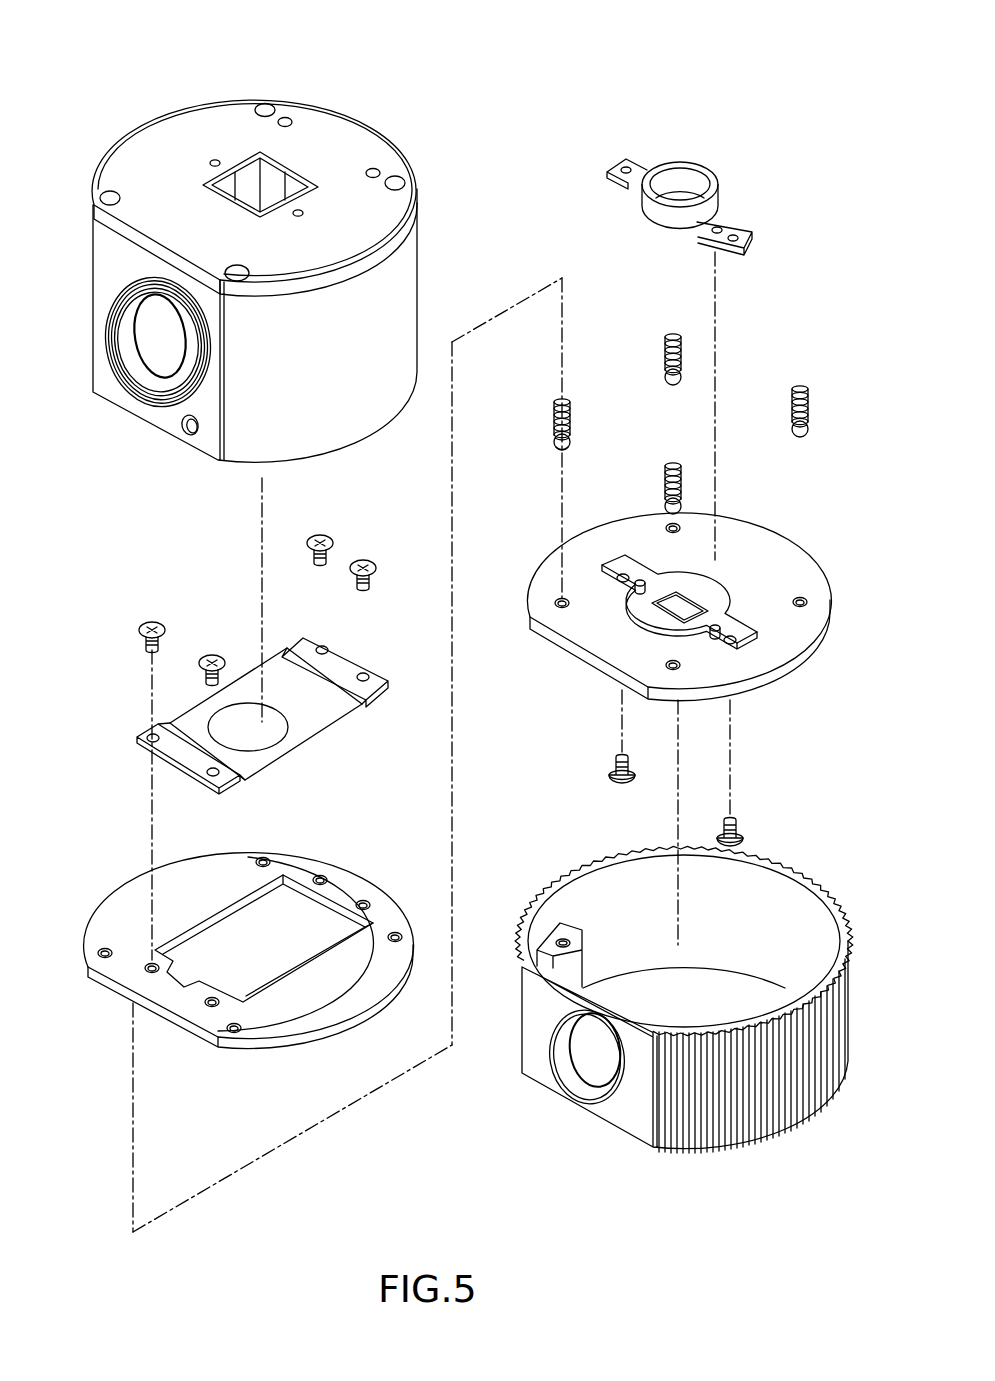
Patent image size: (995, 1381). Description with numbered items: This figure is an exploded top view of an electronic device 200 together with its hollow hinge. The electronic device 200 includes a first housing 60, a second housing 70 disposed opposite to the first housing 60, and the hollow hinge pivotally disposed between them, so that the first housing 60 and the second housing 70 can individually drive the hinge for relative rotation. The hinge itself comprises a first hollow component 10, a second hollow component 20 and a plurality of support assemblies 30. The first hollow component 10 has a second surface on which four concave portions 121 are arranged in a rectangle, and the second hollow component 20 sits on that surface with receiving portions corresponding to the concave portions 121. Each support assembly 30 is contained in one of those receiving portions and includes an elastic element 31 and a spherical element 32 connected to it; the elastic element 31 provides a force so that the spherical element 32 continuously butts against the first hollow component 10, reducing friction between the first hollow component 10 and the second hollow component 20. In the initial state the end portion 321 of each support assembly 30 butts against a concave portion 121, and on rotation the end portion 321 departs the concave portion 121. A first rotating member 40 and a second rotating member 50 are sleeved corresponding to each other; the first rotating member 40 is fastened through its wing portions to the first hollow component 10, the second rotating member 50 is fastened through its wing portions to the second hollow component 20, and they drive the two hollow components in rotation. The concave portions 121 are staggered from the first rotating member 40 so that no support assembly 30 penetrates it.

The electronic device 200 is at (80, 74).
The second housing 70 is at (372, 140).
The first rotating member 40 is at (706, 167).
The support assembly 30 is at (547, 388).
The elastic element 31 is at (552, 406).
The spherical element 32 is at (552, 440).
The end portion 321 is at (550, 448).
The first hollow component 10 is at (758, 527).
The concave portion 121 is at (806, 594).
The second rotating member 50 is at (333, 715).
The second hollow component 20 is at (203, 870).
The first housing 60 is at (635, 1120).